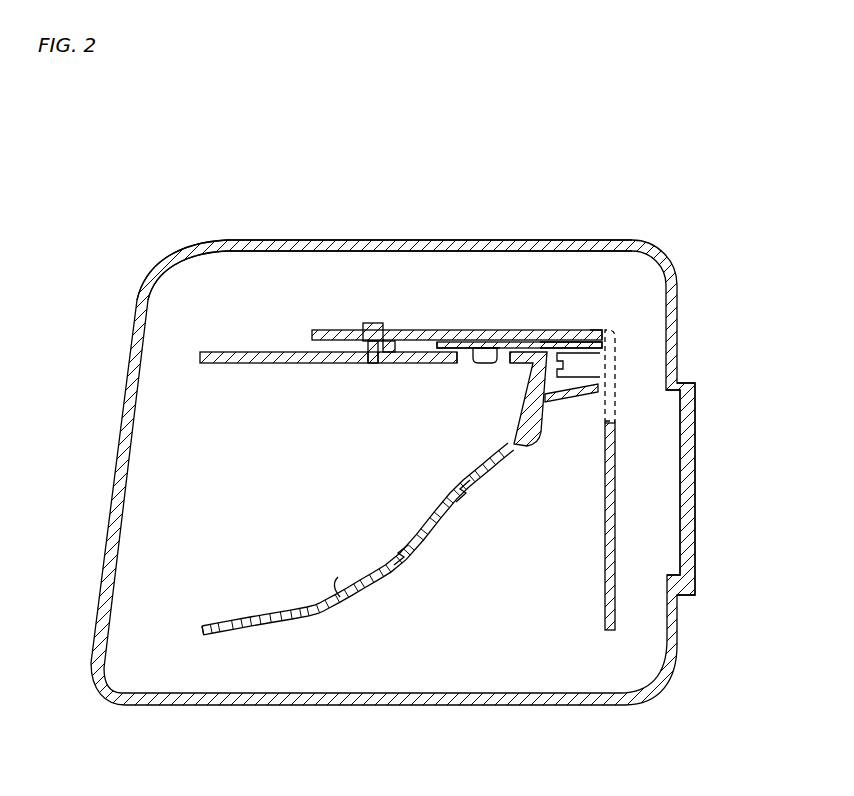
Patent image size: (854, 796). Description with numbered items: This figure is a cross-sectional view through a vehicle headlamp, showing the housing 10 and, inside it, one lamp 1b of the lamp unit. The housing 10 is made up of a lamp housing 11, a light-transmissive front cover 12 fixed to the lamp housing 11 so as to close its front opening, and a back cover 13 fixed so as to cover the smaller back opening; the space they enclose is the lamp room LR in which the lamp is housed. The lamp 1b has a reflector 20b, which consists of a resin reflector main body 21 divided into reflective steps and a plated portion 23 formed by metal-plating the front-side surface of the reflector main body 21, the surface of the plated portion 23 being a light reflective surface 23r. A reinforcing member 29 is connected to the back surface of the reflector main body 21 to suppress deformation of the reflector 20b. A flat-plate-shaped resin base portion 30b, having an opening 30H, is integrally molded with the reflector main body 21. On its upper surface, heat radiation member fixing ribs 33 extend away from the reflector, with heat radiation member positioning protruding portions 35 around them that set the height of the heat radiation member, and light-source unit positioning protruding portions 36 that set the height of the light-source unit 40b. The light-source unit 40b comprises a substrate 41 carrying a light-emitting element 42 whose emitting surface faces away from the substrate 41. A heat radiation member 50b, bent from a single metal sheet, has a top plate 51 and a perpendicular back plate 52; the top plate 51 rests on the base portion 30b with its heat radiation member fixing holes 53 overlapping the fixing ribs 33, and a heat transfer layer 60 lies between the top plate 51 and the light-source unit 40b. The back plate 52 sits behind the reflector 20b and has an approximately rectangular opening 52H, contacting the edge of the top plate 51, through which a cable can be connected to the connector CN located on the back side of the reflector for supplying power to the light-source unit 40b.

The housing 10 is at (670, 257).
The lamp housing 11 is at (473, 240).
The light-transmissive front cover 12 is at (228, 240).
The back cover 13 is at (690, 527).
The lamp 1b is at (198, 291).
The lamp room LR is at (148, 674).
The base portion 30b is at (265, 352).
The opening 30H is at (504, 350).
The top plate 51 is at (335, 332).
The heat radiation member 50b is at (601, 329).
The heat radiation member positioning protruding portion 35 is at (384, 327).
The heat radiation member fixing hole 53 is at (366, 346).
The heat radiation member fixing rib 33 is at (367, 358).
The light-source unit 40b is at (534, 339).
The light-source unit positioning protruding portion 36 is at (443, 344).
The substrate 41 is at (468, 346).
The heat transfer layer 60 is at (572, 342).
The light-emitting element 42 is at (480, 364).
The connector CN is at (600, 377).
The opening 52H is at (618, 344).
The back plate 52 is at (613, 517).
The reinforcing member 29 is at (599, 392).
The reflector main body 21 is at (305, 617).
The plated portion 23 is at (229, 619).
The light reflective surface 23r is at (333, 599).
The reflector 20b is at (200, 635).